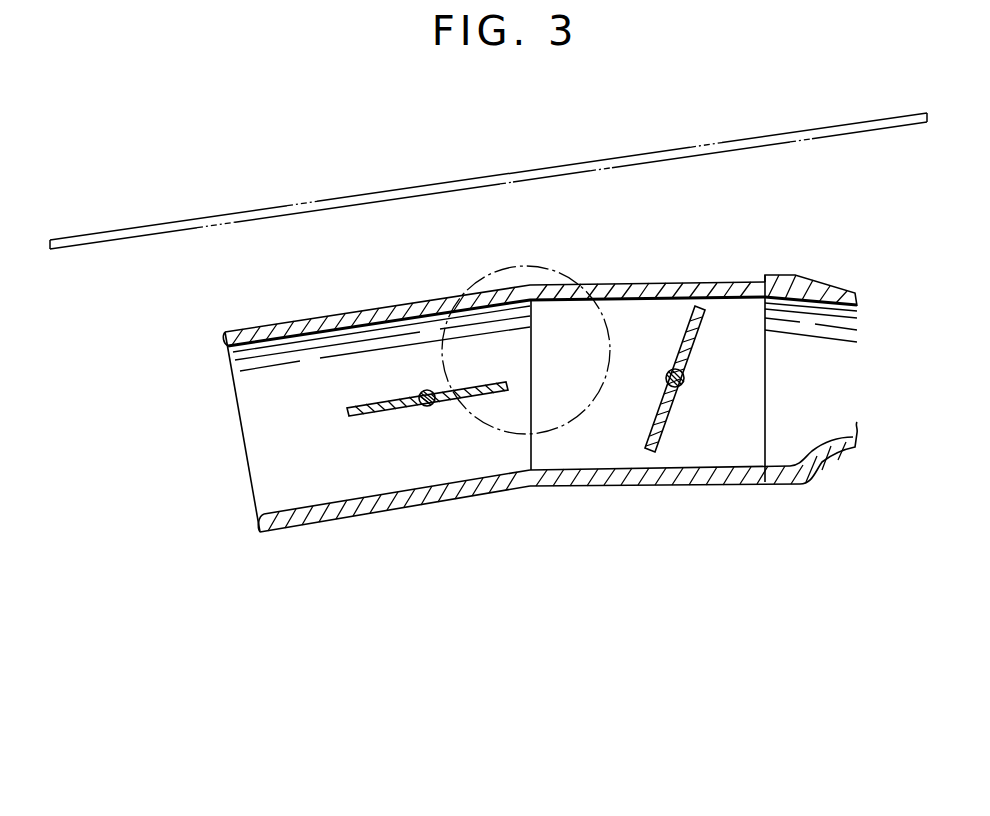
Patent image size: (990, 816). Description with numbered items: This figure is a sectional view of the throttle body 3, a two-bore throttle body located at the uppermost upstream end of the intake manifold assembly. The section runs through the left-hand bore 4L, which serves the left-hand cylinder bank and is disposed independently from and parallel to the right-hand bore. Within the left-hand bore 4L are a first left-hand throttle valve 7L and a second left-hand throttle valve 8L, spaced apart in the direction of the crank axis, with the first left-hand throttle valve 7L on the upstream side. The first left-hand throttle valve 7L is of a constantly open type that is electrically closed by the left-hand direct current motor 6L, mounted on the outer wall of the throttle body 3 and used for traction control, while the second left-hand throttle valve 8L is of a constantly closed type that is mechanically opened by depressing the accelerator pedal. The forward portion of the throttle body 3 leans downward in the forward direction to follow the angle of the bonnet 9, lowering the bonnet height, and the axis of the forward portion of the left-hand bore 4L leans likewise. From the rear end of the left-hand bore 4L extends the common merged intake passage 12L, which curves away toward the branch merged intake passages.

The throttle body 3 is at (388, 308).
The left-hand bore 4L is at (267, 423).
The left-hand direct current motor 6L is at (573, 278).
The first left-hand throttle valve 7L is at (403, 412).
The second left-hand throttle valve 8L is at (672, 413).
The bonnet 9 is at (730, 150).
The common merged intake passage 12L is at (848, 386).